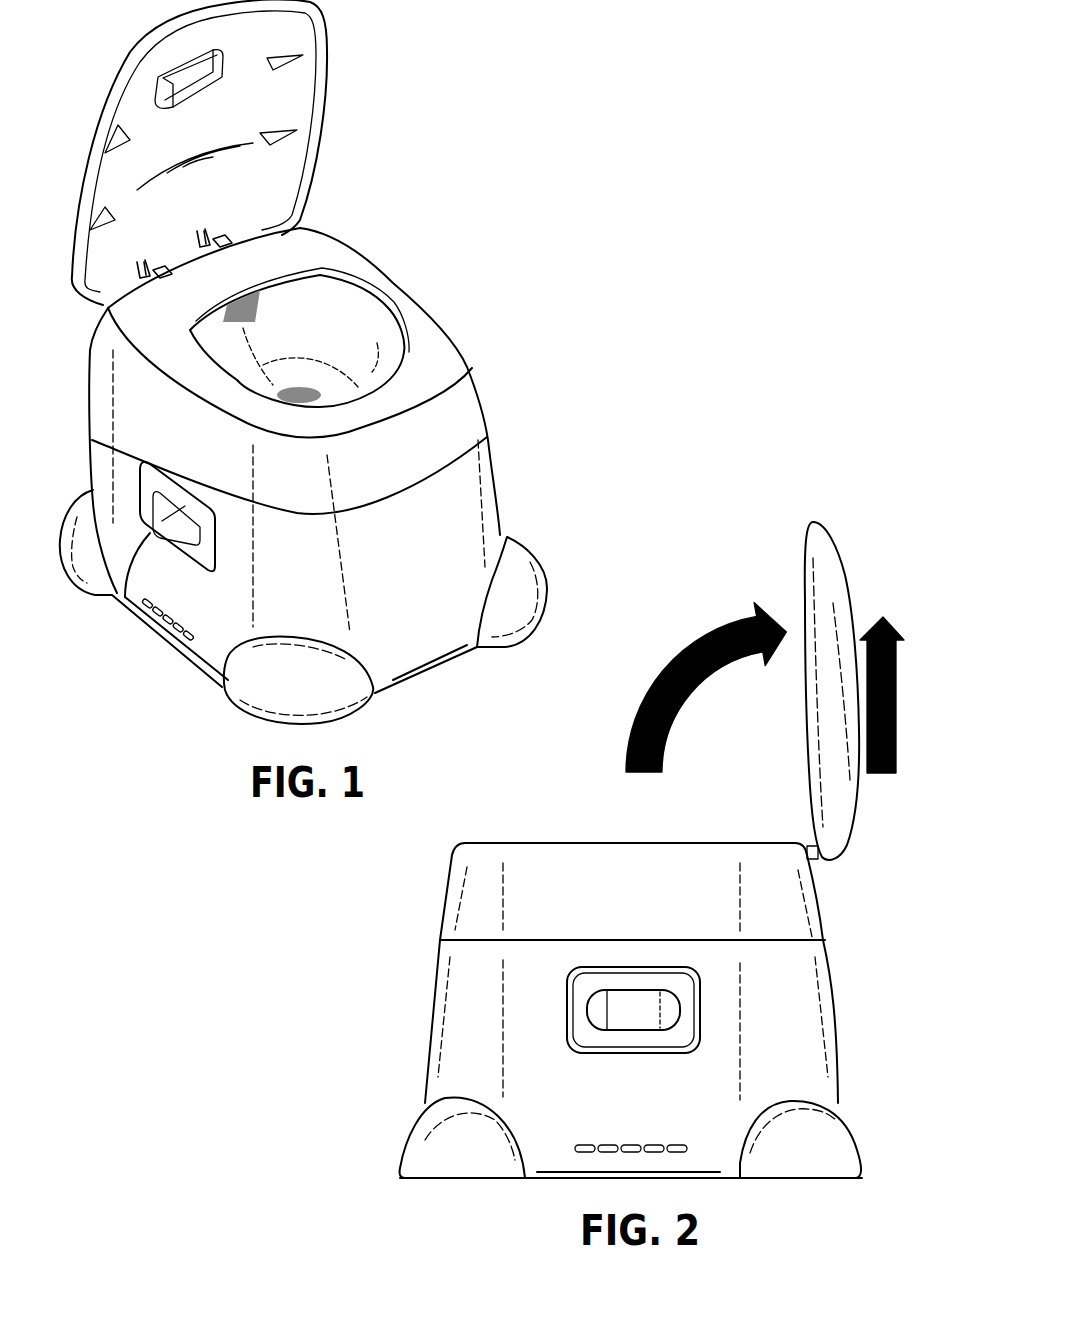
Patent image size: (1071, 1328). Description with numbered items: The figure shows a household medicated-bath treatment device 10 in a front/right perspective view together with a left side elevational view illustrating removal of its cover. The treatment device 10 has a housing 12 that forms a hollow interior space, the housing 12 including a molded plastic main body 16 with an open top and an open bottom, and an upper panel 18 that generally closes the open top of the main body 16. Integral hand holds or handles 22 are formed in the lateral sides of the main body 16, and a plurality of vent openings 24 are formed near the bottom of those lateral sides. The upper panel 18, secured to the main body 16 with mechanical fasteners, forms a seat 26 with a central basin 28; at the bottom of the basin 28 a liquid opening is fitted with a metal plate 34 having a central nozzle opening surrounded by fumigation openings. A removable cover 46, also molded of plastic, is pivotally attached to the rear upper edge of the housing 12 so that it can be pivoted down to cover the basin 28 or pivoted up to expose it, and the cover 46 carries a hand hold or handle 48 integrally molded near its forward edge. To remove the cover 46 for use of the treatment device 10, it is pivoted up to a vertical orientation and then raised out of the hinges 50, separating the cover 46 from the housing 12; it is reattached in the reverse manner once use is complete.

In FIG. 1, the medicated-bath treatment device 10 is at (461, 285).
In FIG. 2, the medicated-bath treatment device 10 is at (507, 813).
In FIG. 1, the housing 12 is at (90, 374).
In FIG. 2, the housing 12 is at (441, 939).
In FIG. 1, the main body 16 is at (447, 510).
In FIG. 2, the main body 16 is at (455, 849).
In FIG. 1, the upper panel 18 is at (369, 264).
In FIG. 2, the upper panel 18 is at (850, 1145).
In FIG. 1, the handles 22 is at (150, 533).
In FIG. 2, the handles 22 is at (636, 967).
In FIG. 1, the vent openings 24 is at (157, 630).
In FIG. 2, the vent openings 24 is at (577, 1148).
In FIG. 1, the seat 26 is at (432, 367).
In FIG. 1, the basin 28 is at (375, 345).
In FIG. 1, the metal plate 34 is at (287, 290).
In FIG. 1, the cover 46 is at (330, 88).
In FIG. 2, the cover 46 is at (830, 535).
In FIG. 1, the handle 48 is at (178, 20).
In FIG. 1, the hinges 50 is at (220, 230).
In FIG. 2, the hinges 50 is at (807, 845).